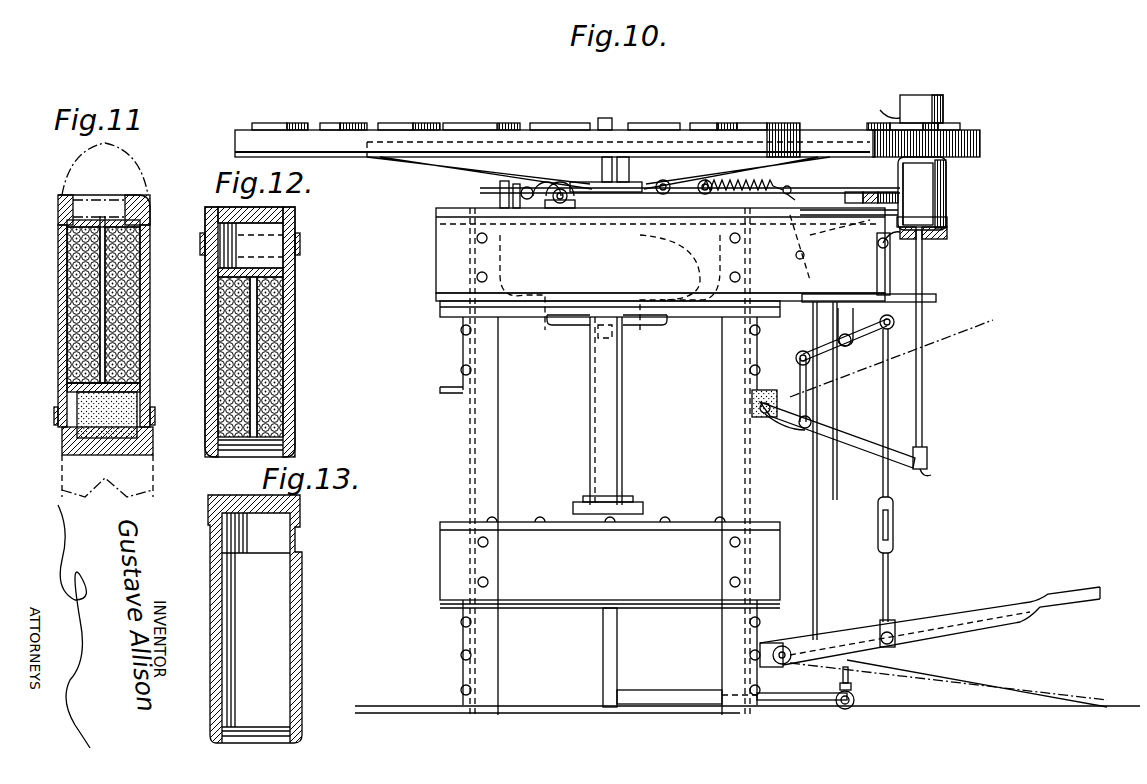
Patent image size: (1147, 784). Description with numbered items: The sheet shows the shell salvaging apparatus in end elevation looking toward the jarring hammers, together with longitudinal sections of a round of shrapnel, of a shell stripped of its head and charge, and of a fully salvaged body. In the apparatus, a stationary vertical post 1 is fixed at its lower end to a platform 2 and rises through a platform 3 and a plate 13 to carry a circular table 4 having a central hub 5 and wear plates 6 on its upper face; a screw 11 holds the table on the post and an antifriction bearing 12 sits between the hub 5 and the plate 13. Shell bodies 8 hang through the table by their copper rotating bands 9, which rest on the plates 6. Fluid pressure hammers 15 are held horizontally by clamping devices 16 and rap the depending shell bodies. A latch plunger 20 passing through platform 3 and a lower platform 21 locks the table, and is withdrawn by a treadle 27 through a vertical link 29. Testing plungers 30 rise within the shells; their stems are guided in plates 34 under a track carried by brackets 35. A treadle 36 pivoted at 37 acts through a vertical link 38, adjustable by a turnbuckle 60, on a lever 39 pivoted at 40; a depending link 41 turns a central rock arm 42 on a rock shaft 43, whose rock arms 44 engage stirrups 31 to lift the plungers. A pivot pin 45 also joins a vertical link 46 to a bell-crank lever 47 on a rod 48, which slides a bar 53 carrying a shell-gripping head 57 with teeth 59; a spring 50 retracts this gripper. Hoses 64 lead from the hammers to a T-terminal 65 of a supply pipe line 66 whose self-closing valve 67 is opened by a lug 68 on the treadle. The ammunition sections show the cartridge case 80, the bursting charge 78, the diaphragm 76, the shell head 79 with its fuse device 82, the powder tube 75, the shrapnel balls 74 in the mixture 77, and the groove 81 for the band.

In FIG. 10, the stationary vertical post 1 is at (590, 398).
In FIG. 10, the platform 2 is at (525, 522).
In FIG. 10, the platform 3 is at (460, 212).
In FIG. 10, the table 4 is at (318, 130).
In FIG. 10, the central hub 5 is at (620, 158).
In FIG. 10, the wear plates 6 is at (268, 124).
In FIG. 11, the shell body 8 is at (58, 335).
In FIG. 13, the shell body 8 is at (288, 592).
In FIG. 10, the shell body 8 is at (922, 98).
In FIG. 11, the rotating band 9 is at (54, 414).
In FIG. 12, the rotating band 9 is at (301, 246).
In FIG. 10, the rotating band 9 is at (880, 110).
In FIG. 10, the screw 11 is at (605, 118).
In FIG. 10, the antifriction bearing 12 is at (592, 182).
In FIG. 10, the plate 13 is at (645, 192).
In FIG. 10, the fluid pressure hammers 15 is at (505, 192).
In FIG. 10, the clamping devices 16 is at (527, 200).
In FIG. 10, the latch plunger 20 is at (845, 185).
In FIG. 10, the lower platform 21 is at (938, 300).
In FIG. 10, the latch-releasing treadle 27 is at (1050, 593).
In FIG. 10, the vertical link 29 is at (813, 538).
In FIG. 10, the testing plungers 30 is at (935, 232).
In FIG. 10, the stirrups 31 is at (930, 478).
In FIG. 10, the plates 34 is at (948, 240).
In FIG. 10, the brackets 35 is at (910, 257).
In FIG. 10, the treadle 36 is at (1035, 605).
In FIG. 10, the pivot 37 is at (790, 648).
In FIG. 10, the vertical link 38 is at (883, 392).
In FIG. 10, the lever 39 is at (810, 350).
In FIG. 10, the pivot 40 is at (847, 347).
In FIG. 10, the depending link 41 is at (797, 375).
In FIG. 10, the central rock arm 42 is at (778, 430).
In FIG. 10, the rock shaft 43 is at (752, 410).
In FIG. 10, the rock arms 44 is at (820, 432).
In FIG. 10, the pivot pin 45 is at (896, 322).
In FIG. 10, the vertical link 46 is at (877, 274).
In FIG. 10, the bell-crank lever 47 is at (795, 200).
In FIG. 10, the rod 48 is at (796, 256).
In FIG. 10, the spring 50 is at (740, 186).
In FIG. 10, the slide bar 53 is at (705, 235).
In FIG. 10, the shell-gripping head 57 is at (880, 192).
In FIG. 10, the teeth 59 is at (908, 195).
In FIG. 10, the turnbuckle 60 is at (895, 520).
In FIG. 10, the hose 64 is at (522, 318).
In FIG. 10, the T-terminal 65 is at (578, 330).
In FIG. 10, the fluid pressure supply pipe line 66 is at (686, 694).
In FIG. 10, the self-closing valve 67 is at (840, 675).
In FIG. 10, the lug 68 is at (850, 660).
In FIG. 11, the shrapnel balls 74 is at (70, 290).
In FIG. 12, the shrapnel balls 74 is at (280, 296).
In FIG. 11, the powder tube 75 is at (105, 340).
In FIG. 12, the powder tube 75 is at (258, 383).
In FIG. 11, the diaphragm 76 is at (130, 388).
In FIG. 12, the diaphragm 76 is at (275, 268).
In FIG. 11, the mixture 77 is at (67, 226).
In FIG. 12, the mixture 77 is at (275, 434).
In FIG. 11, the bursting charge 78 is at (77, 430).
In FIG. 11, the shell head 79 is at (126, 222).
In FIG. 11, the cartridge case 80 is at (105, 480).
In FIG. 13, the groove 81 is at (208, 532).
In FIG. 11, the fuse device 82 is at (88, 152).